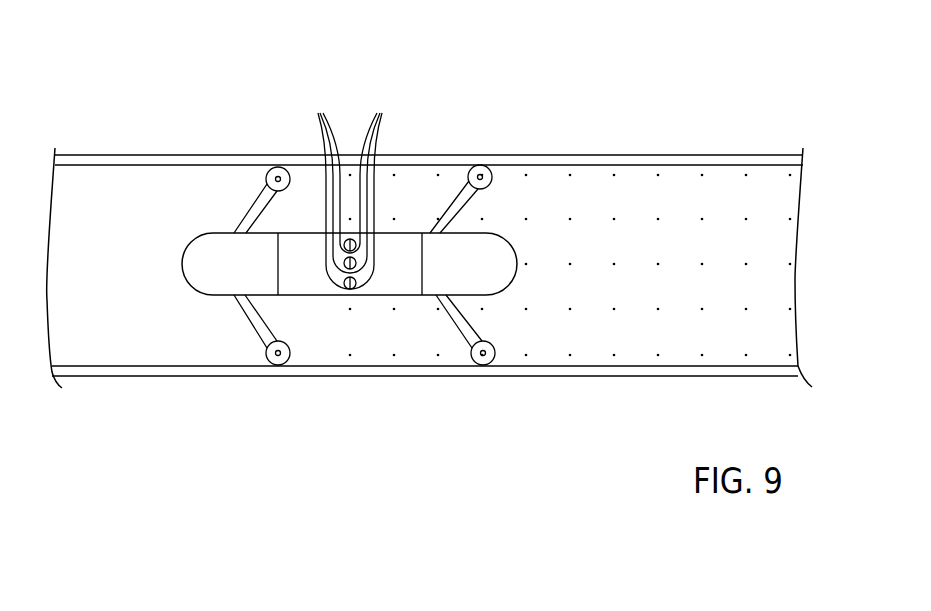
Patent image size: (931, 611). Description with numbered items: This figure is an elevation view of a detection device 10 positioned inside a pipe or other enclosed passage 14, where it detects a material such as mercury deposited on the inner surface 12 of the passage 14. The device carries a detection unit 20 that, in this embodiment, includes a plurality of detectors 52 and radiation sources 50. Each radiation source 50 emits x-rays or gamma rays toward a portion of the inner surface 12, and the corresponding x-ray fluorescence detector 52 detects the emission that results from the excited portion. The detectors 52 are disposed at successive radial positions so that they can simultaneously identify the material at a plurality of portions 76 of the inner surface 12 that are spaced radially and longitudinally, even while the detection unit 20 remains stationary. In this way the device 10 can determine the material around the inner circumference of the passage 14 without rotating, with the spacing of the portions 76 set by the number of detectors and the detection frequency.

The detection device 10 is at (160, 205).
The inner surface 12 is at (713, 349).
The passage 14 is at (740, 154).
The detection unit 20 is at (343, 300).
The radiation source 50 is at (322, 112).
The x-ray fluorescence detector 52 is at (384, 117).
The portions 76 is at (620, 263).